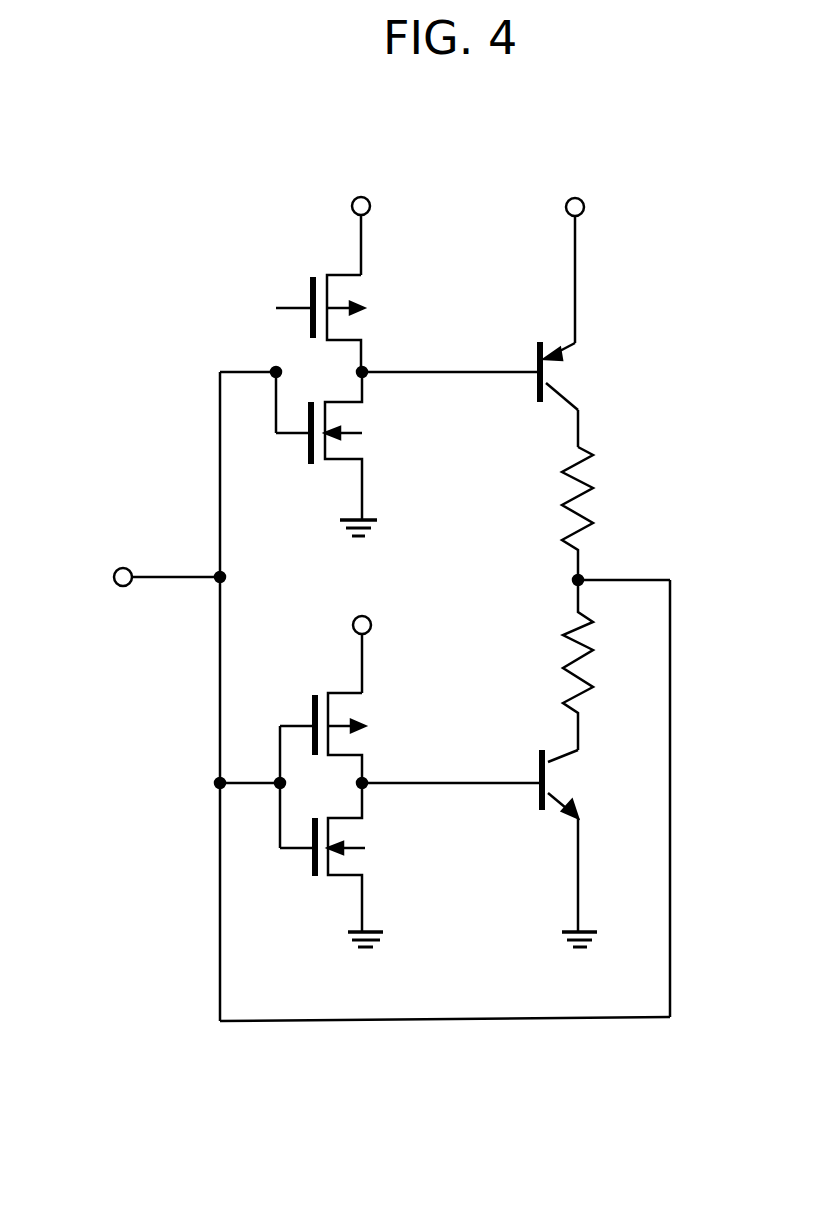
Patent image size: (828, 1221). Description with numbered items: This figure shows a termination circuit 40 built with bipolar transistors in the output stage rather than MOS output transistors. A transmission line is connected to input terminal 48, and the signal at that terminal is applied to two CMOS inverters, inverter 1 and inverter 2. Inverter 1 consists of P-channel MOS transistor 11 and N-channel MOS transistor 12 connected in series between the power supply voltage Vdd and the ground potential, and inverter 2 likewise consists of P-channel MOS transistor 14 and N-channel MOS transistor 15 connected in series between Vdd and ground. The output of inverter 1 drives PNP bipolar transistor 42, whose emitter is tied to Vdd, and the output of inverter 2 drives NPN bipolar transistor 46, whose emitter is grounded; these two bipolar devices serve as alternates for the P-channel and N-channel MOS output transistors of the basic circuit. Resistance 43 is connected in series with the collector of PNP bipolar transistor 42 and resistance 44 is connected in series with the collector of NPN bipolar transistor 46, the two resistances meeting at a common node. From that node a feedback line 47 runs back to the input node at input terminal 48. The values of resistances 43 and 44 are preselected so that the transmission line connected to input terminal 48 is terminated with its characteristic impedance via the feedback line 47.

The level shifter circuit 40 is at (700, 244).
The input terminal 48 is at (125, 562).
The inverter 1 is at (268, 500).
The inverter 2 is at (282, 898).
The P-channel MOS transistor 11 is at (362, 297).
The N-channel MOS transistor 12 is at (360, 440).
The P-channel MOS transistor 14 is at (360, 718).
The N-channel MOS transistor 15 is at (367, 837).
The PNP bipolar transistor 42 is at (575, 360).
The resistance 43 is at (585, 480).
The resistance 44 is at (572, 660).
The NPN bipolar transistor 46 is at (558, 782).
The feedback line 47 is at (442, 1018).